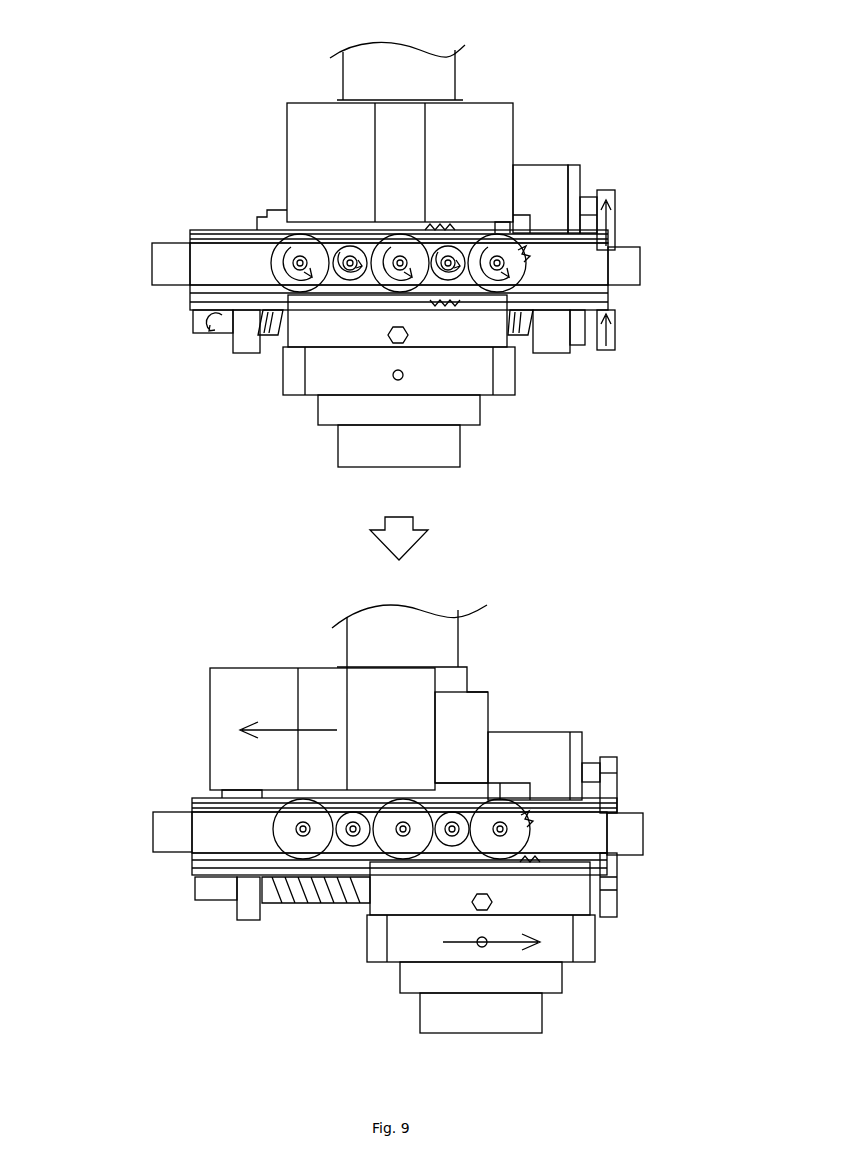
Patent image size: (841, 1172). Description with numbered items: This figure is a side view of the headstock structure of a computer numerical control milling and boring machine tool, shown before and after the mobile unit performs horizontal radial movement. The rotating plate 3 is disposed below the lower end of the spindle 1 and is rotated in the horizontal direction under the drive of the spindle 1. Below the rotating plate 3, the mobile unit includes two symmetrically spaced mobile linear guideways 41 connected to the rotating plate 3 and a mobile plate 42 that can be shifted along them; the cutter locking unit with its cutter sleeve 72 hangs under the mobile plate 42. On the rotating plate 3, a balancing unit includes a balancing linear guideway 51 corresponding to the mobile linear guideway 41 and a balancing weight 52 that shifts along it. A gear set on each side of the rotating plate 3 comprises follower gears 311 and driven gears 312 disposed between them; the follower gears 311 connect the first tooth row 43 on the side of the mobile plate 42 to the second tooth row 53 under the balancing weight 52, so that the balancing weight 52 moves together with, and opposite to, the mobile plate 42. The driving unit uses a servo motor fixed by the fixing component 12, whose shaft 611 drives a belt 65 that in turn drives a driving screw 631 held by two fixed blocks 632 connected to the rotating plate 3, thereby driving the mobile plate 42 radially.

The spindle 1 is at (466, 52).
The rotating plate 3 is at (150, 262).
The fixing component 12 is at (538, 168).
The mobile linear guideway 41 is at (190, 298).
The mobile plate 42 is at (350, 398).
The first tooth row 43 is at (340, 350).
The balancing linear guideway 51 is at (205, 230).
The balancing weight 52 is at (310, 102).
The second tooth row 53 is at (345, 222).
The belt 65 is at (617, 213).
The cutter sleeve 72 is at (462, 445).
The follower gear 311 is at (620, 263).
The driven gear 312 is at (450, 244).
The shaft 611 is at (606, 194).
The driving screw 631 is at (195, 325).
The fixed block 632 is at (245, 355).